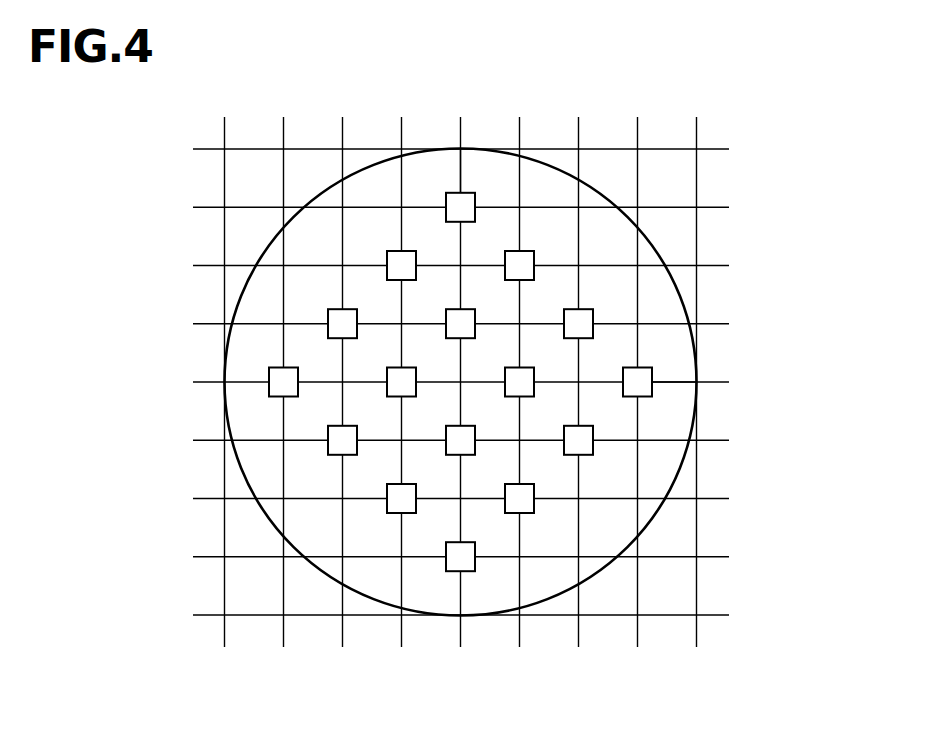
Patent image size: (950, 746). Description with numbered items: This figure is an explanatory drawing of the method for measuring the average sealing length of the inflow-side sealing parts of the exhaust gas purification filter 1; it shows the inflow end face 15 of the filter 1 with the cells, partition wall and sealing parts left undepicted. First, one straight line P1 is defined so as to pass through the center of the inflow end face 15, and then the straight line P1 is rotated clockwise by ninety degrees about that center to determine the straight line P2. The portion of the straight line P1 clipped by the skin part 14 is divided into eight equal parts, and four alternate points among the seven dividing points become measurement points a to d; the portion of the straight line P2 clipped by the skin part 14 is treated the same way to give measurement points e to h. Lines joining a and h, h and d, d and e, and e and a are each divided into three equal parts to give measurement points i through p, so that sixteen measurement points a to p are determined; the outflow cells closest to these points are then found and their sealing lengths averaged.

The exhaust gas purification filter 1 is at (662, 180).
The skin part 14 is at (550, 600).
The inflow end face 15 is at (652, 308).
The straight line P1 is at (460, 180).
The straight line P2 is at (673, 382).